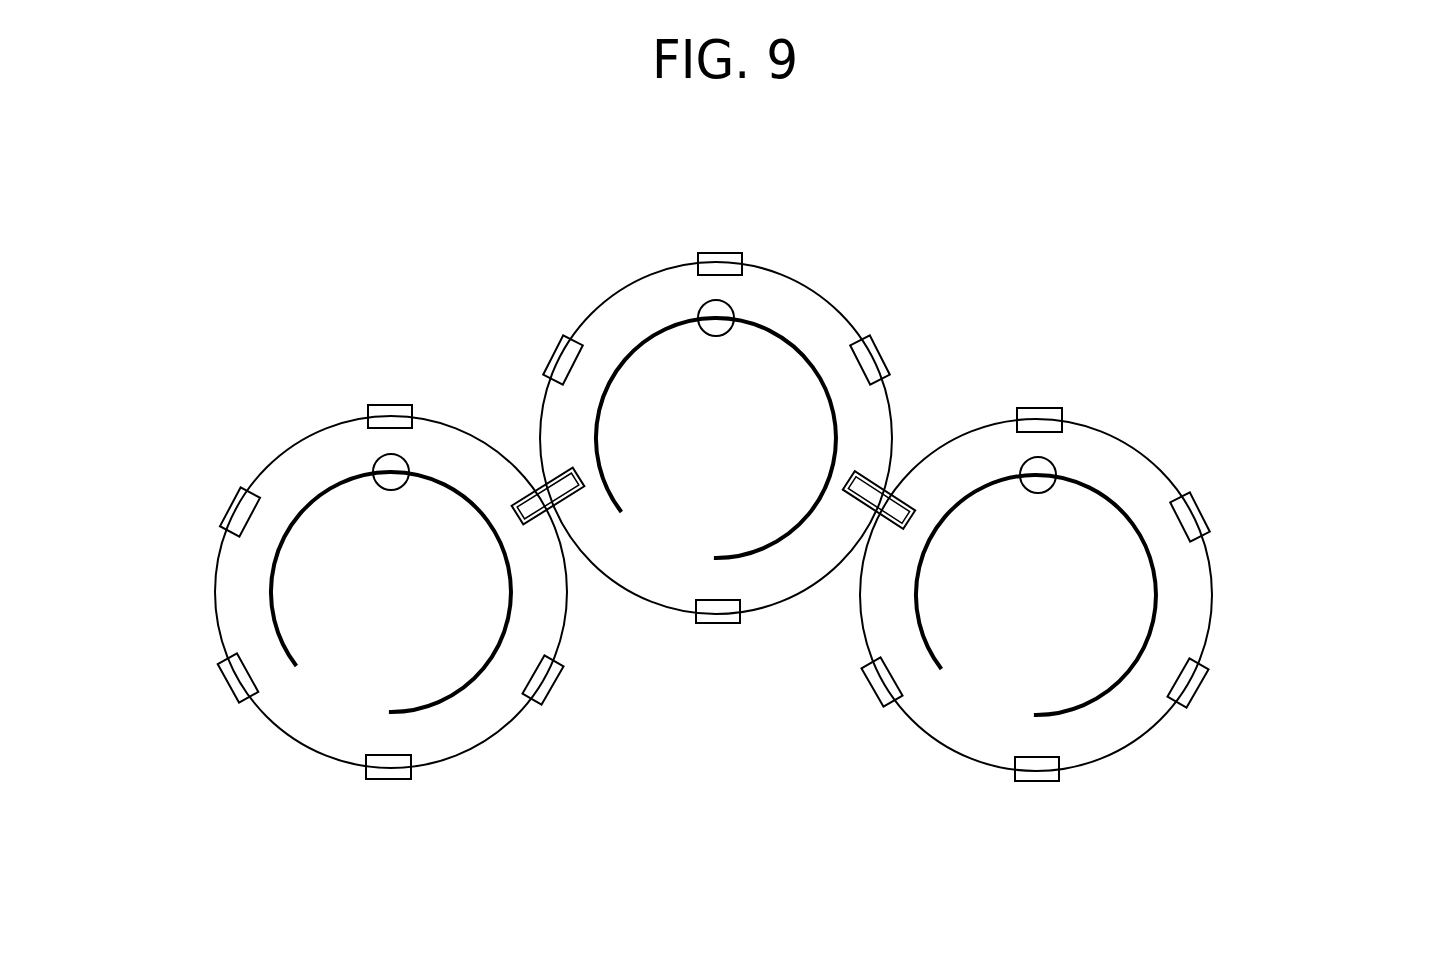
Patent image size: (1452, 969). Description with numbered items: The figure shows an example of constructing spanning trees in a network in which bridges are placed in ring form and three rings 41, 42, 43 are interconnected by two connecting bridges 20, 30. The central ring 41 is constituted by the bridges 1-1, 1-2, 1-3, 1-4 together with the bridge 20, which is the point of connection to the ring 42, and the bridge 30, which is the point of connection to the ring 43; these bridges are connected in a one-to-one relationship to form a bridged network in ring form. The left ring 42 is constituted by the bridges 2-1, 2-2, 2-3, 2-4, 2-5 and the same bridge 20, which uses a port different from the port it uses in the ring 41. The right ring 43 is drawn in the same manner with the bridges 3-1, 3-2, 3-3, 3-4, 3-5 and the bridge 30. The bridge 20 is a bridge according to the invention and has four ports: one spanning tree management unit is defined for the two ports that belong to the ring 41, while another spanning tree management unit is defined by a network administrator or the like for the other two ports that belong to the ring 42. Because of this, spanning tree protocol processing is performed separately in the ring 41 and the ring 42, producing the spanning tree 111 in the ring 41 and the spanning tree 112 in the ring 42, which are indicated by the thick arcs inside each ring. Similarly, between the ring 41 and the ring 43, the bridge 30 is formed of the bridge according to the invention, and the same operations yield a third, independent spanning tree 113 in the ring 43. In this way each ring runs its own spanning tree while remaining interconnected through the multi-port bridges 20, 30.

The ring 41 is at (642, 278).
The ring 42 is at (217, 594).
The ring 43 is at (953, 752).
The spanning tree 111 is at (775, 330).
The spanning tree 112 is at (318, 492).
The spanning tree 113 is at (1105, 492).
The bridge 20 is at (563, 523).
The bridge 30 is at (893, 490).
The bridge 1-1 is at (725, 253).
The bridge 1-2 is at (555, 343).
The bridge 1-3 is at (720, 623).
The bridge 1-4 is at (913, 315).
The bridge 2-1 is at (392, 407).
The bridge 2-2 is at (233, 500).
The bridge 2-3 is at (227, 687).
The bridge 2-4 is at (387, 780).
The bridge 2-5 is at (558, 690).
The bridge 3-1 is at (1043, 408).
The bridge 3-2 is at (1202, 511).
The bridge 3-3 is at (1202, 685).
The bridge 3-4 is at (1033, 782).
The bridge 3-5 is at (878, 702).